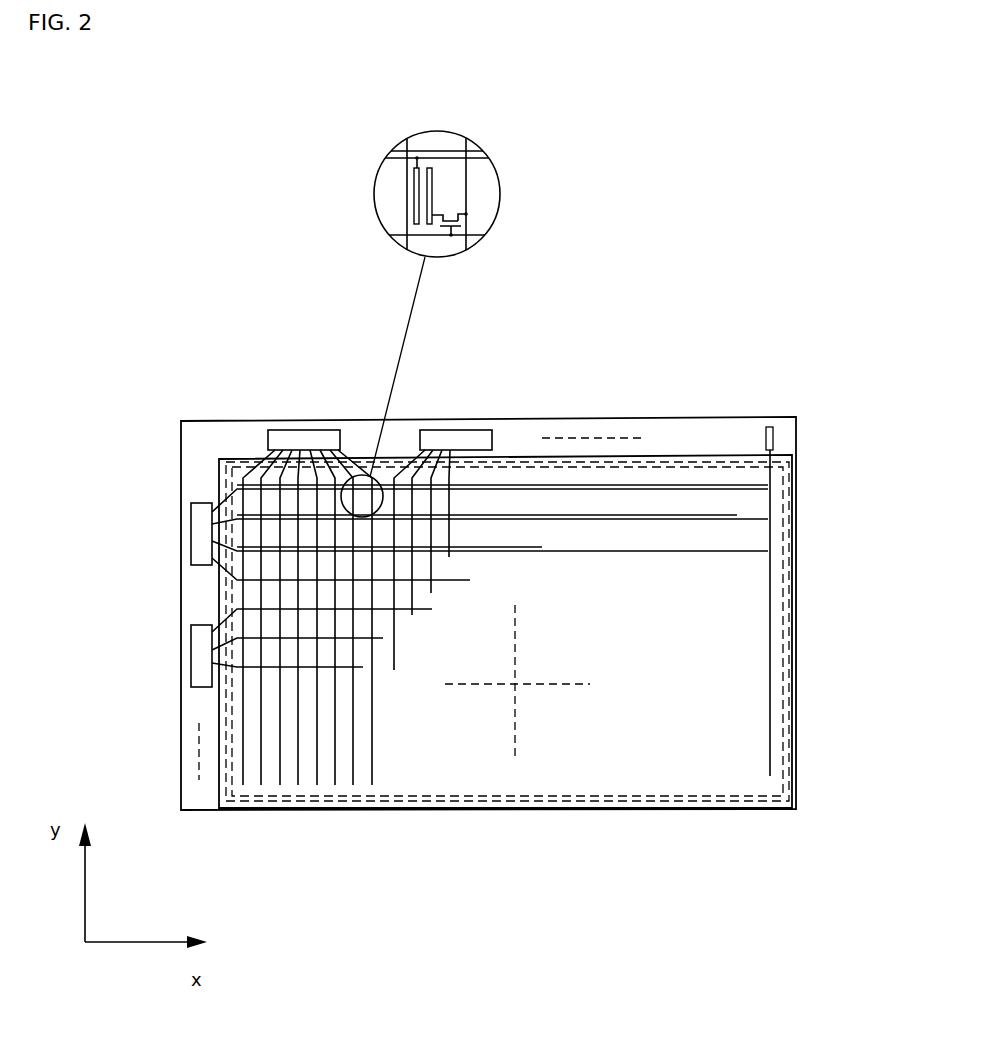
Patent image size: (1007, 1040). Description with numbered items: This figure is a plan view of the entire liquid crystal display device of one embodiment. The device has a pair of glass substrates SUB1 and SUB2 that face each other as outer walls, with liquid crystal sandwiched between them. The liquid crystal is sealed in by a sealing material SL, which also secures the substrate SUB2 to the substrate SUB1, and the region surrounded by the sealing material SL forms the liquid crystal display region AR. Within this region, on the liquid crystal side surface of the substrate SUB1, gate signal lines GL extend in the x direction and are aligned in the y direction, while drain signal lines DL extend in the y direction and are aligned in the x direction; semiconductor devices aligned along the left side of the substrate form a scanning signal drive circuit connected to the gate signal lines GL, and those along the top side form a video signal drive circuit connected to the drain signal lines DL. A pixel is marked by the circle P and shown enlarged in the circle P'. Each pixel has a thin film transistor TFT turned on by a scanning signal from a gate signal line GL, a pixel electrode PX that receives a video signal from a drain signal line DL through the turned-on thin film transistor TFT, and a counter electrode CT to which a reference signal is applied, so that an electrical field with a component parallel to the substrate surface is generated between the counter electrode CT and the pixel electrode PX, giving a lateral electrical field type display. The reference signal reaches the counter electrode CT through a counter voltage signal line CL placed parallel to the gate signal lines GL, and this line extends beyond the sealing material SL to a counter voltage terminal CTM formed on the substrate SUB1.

The substrate SUB1 is at (256, 421).
The substrate SUB2 is at (219, 745).
The sealing material SL is at (483, 801).
The liquid crystal display region AR is at (580, 606).
The counter voltage terminal CTM is at (774, 431).
The drain signal line DL is at (375, 718).
The gate signal line GL is at (583, 519).
The counter voltage signal line CL is at (678, 551).
The circle P is at (383, 397).
The circle P' is at (437, 176).
The counter electrode CT is at (414, 187).
The pixel electrode PX is at (432, 187).
The thin film transistor TFT is at (455, 243).